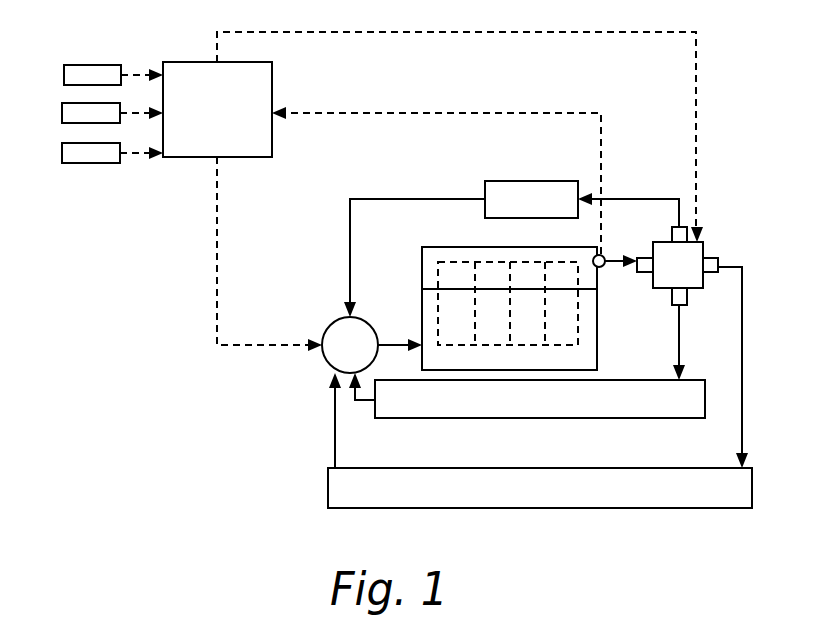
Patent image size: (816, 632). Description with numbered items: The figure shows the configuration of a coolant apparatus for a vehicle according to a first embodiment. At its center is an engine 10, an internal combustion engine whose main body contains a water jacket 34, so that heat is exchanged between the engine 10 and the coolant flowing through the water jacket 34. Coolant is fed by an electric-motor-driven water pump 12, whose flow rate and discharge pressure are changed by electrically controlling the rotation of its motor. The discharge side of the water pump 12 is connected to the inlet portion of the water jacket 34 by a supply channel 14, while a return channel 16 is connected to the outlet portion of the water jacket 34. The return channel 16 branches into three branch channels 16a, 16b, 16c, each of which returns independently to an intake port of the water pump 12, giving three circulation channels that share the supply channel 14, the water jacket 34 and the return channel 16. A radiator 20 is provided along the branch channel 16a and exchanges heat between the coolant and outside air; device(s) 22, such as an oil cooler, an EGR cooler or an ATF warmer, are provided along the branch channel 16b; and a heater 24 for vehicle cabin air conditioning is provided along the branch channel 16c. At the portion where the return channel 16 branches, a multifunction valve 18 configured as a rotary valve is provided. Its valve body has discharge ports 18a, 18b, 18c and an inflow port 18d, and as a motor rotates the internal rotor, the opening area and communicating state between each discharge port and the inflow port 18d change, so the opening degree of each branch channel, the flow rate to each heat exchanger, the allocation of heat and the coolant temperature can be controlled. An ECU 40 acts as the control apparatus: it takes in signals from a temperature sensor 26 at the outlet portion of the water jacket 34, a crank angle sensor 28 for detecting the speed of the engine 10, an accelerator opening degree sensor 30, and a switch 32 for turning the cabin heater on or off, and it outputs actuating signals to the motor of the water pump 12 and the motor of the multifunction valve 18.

The engine 10 is at (414, 270).
The water pump 12 is at (337, 315).
The supply channel 14 is at (395, 338).
The return channel 16 is at (608, 254).
The branch channel 16a is at (742, 297).
The branch channel 16b is at (679, 348).
The branch channel 16c is at (397, 199).
The multifunction valve 18 is at (713, 227).
The discharge port 18a is at (712, 258).
The discharge port 18b is at (677, 306).
The discharge port 18c is at (680, 226).
The inflow port 18d is at (646, 257).
The radiator 20 is at (328, 490).
The device(s) 22 is at (666, 418).
The heater 24 is at (510, 181).
The temperature sensor 26 is at (600, 268).
The crank angle sensor 28 is at (64, 77).
The accelerator opening degree sensor 30 is at (62, 115).
The switch 32 is at (62, 155).
The water jacket 34 is at (462, 262).
The ECU 40 is at (190, 62).